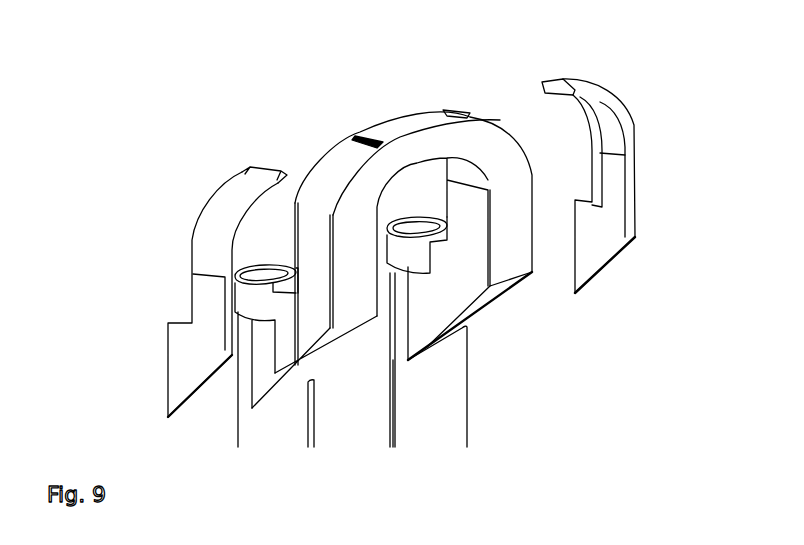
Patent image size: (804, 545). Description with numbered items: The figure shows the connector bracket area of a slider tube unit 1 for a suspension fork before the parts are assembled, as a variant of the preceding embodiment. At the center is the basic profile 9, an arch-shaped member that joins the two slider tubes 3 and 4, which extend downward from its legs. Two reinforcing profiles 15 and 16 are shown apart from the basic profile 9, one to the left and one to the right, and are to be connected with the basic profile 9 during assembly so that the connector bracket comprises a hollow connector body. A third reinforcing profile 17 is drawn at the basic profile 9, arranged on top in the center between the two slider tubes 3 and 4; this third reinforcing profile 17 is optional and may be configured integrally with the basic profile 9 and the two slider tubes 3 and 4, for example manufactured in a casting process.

The slider tube unit 1 is at (145, 110).
The slider tube 3 is at (237, 445).
The slider tube 4 is at (443, 427).
The basic profile 9 is at (324, 128).
The reinforcing profile 15 is at (217, 208).
The reinforcing profile 16 is at (638, 110).
The reinforcing profile 17 is at (404, 130).